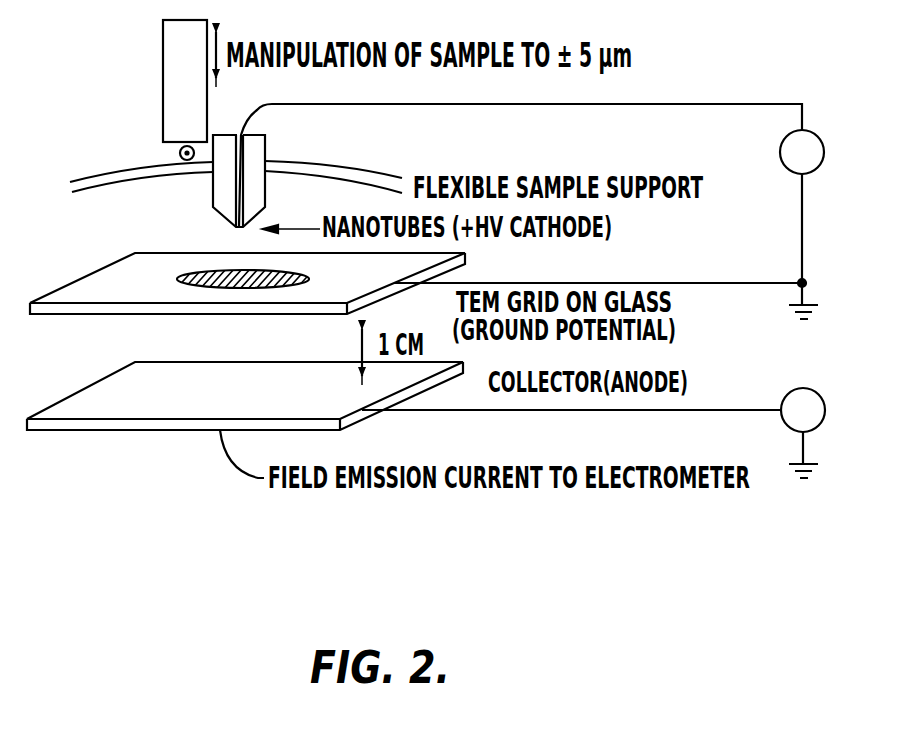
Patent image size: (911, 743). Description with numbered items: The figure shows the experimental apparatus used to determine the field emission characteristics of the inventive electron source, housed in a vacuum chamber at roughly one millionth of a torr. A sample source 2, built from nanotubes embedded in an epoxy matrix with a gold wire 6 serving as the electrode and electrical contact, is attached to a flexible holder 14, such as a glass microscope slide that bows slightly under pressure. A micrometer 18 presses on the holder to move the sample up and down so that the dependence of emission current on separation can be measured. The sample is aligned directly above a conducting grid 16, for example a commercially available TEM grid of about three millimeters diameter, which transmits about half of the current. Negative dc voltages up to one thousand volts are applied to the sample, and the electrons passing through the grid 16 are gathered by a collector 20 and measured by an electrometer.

The field emission electron source 2 is at (273, 152).
The gold wire 6 is at (259, 110).
The flexible holder 14 is at (68, 187).
The conducting grid 16 is at (176, 278).
The micrometer 18 is at (163, 44).
The collector 20 is at (365, 424).